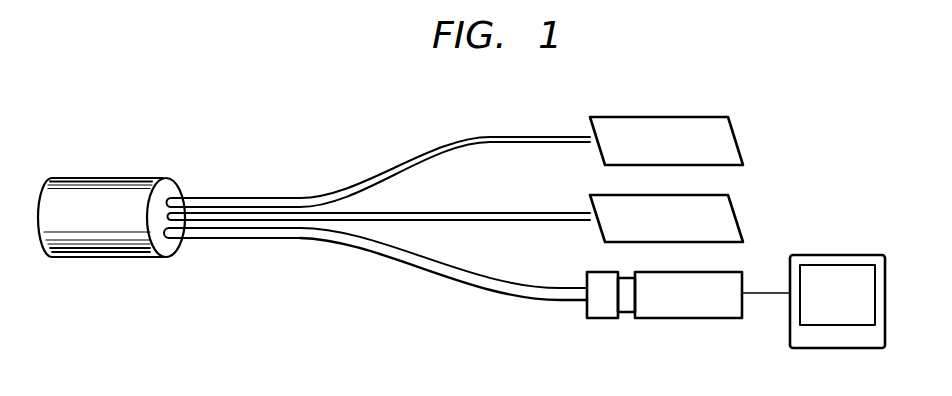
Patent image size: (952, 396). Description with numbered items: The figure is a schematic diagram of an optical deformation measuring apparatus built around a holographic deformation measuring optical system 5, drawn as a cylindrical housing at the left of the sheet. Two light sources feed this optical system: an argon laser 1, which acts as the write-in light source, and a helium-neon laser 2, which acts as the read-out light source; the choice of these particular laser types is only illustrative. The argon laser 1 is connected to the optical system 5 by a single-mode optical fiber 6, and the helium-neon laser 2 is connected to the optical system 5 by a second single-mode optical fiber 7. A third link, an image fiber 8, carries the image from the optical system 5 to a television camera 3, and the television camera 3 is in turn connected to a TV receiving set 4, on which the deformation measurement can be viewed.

The argon laser 1 is at (730, 142).
The helium-neon laser 2 is at (725, 218).
The television camera 3 is at (725, 280).
The TV receiving set 4 is at (857, 280).
The holographic deformation measuring optical system 5 is at (112, 245).
The single-mode optical fiber 6 is at (415, 160).
The single-mode optical fiber 7 is at (447, 213).
The image fiber 8 is at (443, 272).